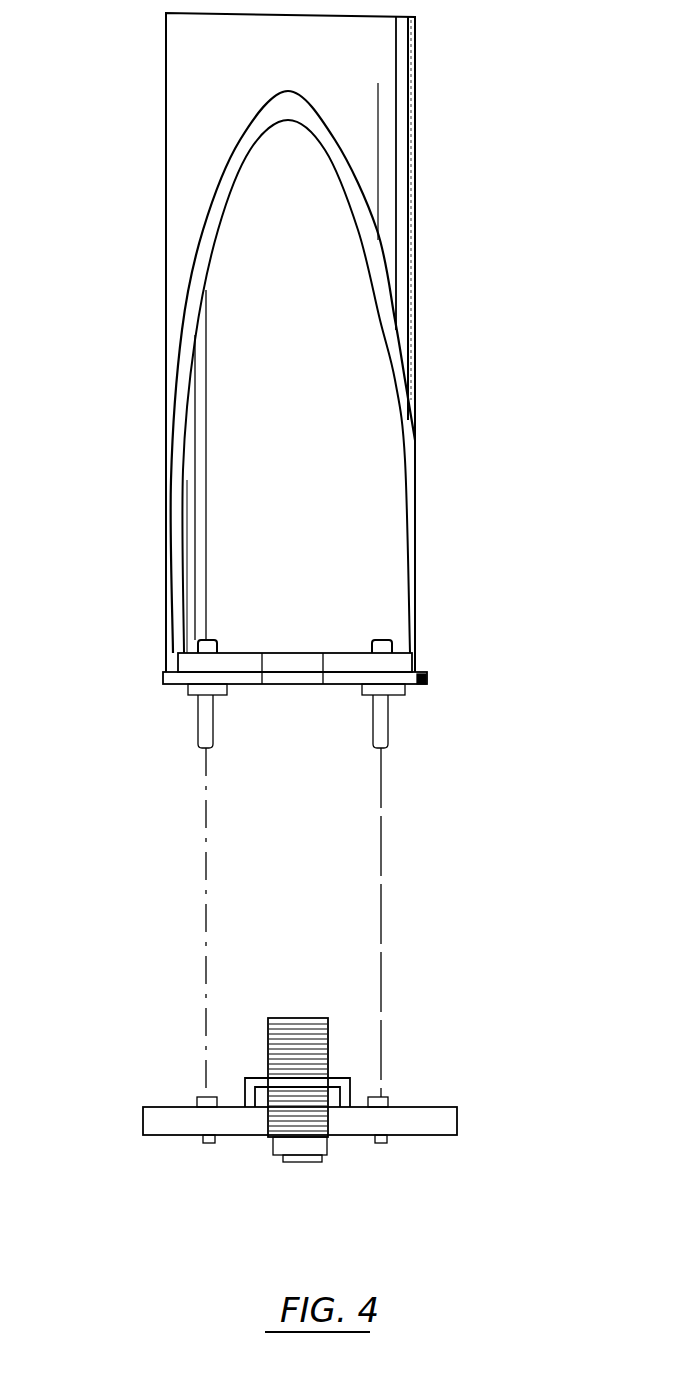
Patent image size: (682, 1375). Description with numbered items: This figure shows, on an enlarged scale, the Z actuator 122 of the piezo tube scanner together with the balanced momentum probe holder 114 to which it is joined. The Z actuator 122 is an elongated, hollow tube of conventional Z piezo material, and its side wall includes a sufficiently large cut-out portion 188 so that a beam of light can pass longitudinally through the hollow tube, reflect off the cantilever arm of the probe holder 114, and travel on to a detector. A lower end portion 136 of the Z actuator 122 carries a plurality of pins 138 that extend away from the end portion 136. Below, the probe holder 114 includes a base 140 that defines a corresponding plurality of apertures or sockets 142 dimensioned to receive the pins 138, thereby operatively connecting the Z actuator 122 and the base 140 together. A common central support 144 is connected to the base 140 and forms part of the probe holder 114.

The balanced momentum probe holder 114 is at (468, 1088).
The Z actuator 122 is at (390, 200).
The lower end portion 136 is at (415, 690).
The pins 138 is at (196, 727).
The base 140 is at (143, 1118).
The apertures 142 is at (205, 1140).
The common central support 144 is at (350, 1080).
The cut-out portion 188 is at (172, 400).